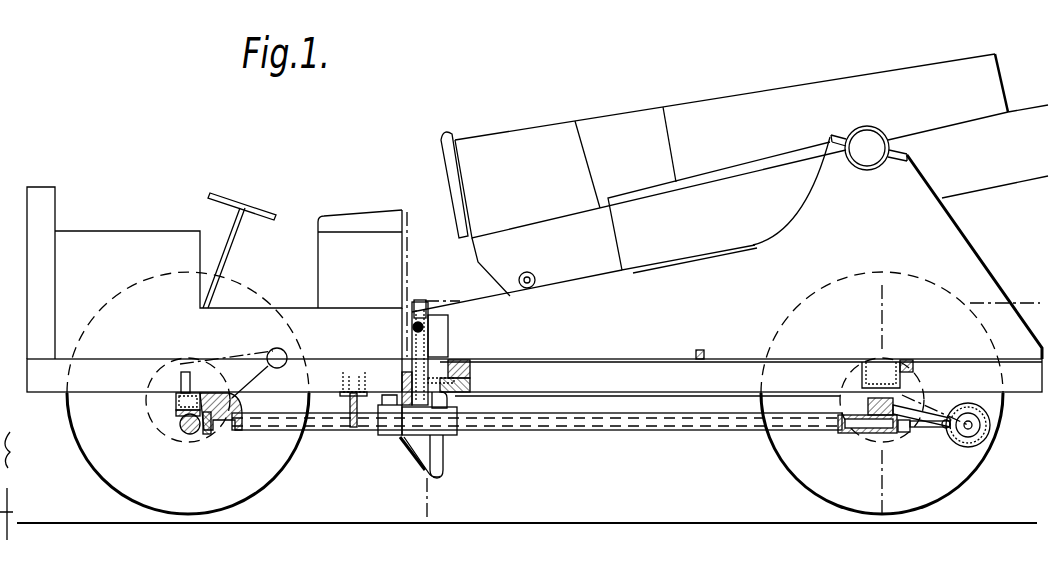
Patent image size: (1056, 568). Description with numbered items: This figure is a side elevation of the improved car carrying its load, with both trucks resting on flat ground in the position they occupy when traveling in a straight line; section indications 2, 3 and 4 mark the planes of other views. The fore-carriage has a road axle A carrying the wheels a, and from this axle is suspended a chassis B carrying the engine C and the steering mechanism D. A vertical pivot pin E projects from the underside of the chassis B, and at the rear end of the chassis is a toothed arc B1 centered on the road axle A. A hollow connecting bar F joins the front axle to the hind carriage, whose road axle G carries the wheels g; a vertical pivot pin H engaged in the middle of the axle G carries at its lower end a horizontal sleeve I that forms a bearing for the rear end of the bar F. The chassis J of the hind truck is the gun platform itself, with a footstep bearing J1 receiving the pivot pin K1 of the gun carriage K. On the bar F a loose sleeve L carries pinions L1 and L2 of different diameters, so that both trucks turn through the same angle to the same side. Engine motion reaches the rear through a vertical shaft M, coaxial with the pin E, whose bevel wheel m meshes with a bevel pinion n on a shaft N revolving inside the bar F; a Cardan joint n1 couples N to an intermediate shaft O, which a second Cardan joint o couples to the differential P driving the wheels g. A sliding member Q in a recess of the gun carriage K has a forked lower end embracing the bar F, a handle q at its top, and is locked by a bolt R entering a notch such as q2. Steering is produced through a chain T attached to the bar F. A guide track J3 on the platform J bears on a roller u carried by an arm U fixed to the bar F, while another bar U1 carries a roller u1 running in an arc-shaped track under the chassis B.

The chassis B is at (57, 383).
The engine C is at (138, 243).
The steering mechanism D is at (230, 244).
The gun carriage K is at (507, 308).
The wheels a is at (253, 497).
The wheels g is at (960, 490).
The connecting bar F is at (292, 431).
The vertical shaft M is at (183, 383).
The vertical pivot pin E is at (176, 398).
The bevel toothed wheel m is at (178, 413).
The road axle A is at (185, 431).
The bevel pinion n is at (207, 434).
The shaft N is at (218, 426).
The arc B1 is at (387, 368).
The chain T is at (350, 407).
The roller u1 is at (402, 395).
The bar U1 is at (377, 413).
The handle q is at (420, 302).
The bolt R is at (412, 328).
The notch q2 is at (408, 377).
The sliding member Q is at (425, 360).
The guide track J3 is at (460, 373).
The roller u is at (462, 385).
The arm U is at (447, 403).
The pinion L1 is at (402, 438).
The sleeve L is at (420, 440).
The pinion L2 is at (440, 449).
The chassis J is at (666, 393).
The pivot pin K1 is at (880, 377).
The footstep bearing J1 is at (913, 358).
The vertical pivot pin H is at (918, 392).
The road axle G is at (868, 407).
The horizontal sleeve I is at (877, 433).
The Cardan joint n1 is at (905, 432).
The intermediate shaft O is at (927, 430).
The Cardan joint o is at (940, 433).
The differential P is at (988, 423).
The section line 2 is at (732, 290).
The section line 3 is at (871, 400).
The section line 4 is at (426, 365).